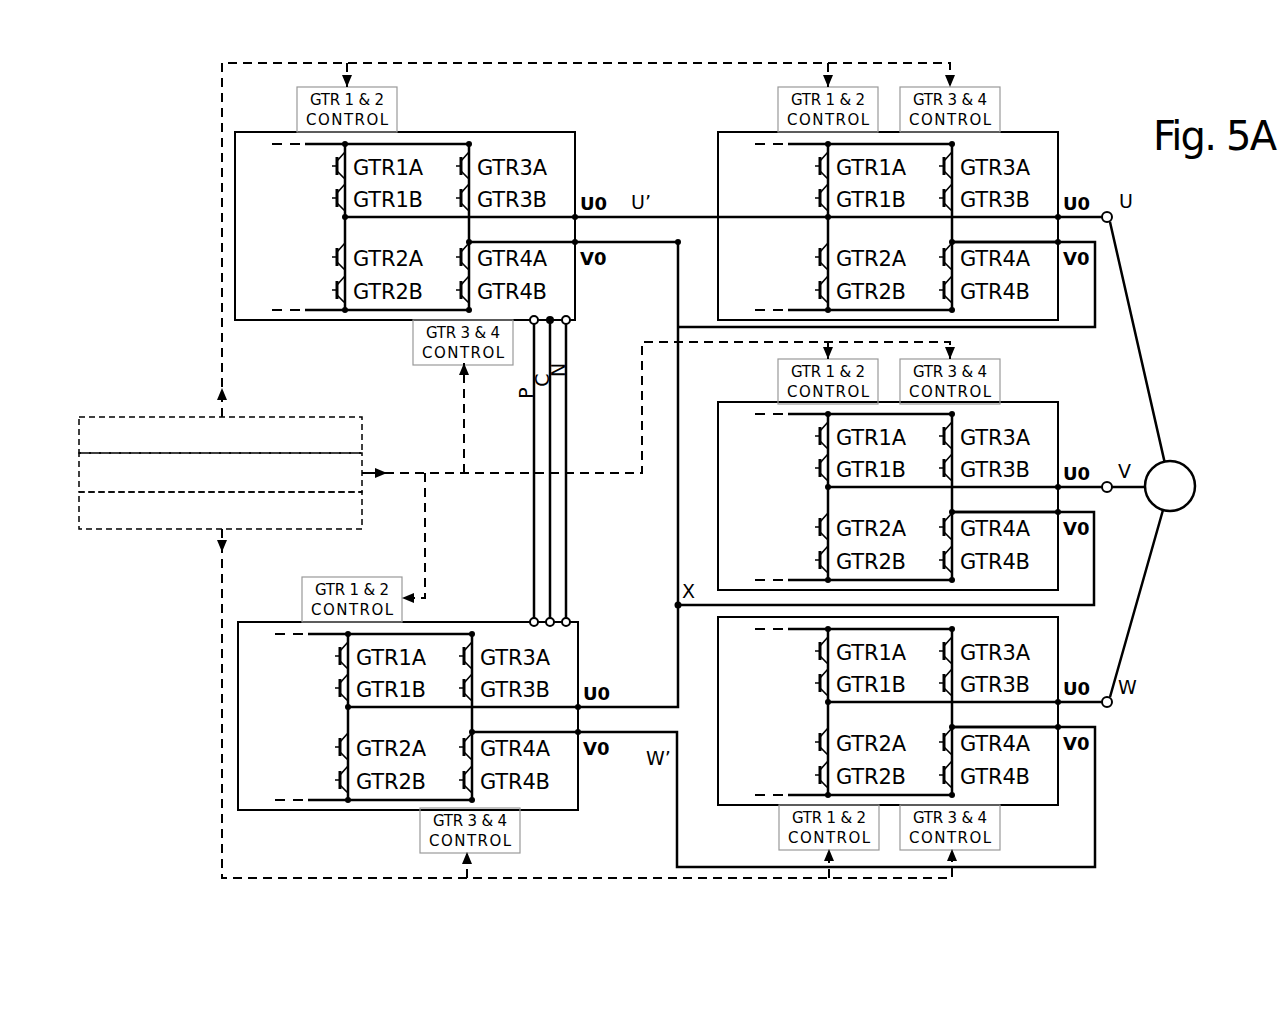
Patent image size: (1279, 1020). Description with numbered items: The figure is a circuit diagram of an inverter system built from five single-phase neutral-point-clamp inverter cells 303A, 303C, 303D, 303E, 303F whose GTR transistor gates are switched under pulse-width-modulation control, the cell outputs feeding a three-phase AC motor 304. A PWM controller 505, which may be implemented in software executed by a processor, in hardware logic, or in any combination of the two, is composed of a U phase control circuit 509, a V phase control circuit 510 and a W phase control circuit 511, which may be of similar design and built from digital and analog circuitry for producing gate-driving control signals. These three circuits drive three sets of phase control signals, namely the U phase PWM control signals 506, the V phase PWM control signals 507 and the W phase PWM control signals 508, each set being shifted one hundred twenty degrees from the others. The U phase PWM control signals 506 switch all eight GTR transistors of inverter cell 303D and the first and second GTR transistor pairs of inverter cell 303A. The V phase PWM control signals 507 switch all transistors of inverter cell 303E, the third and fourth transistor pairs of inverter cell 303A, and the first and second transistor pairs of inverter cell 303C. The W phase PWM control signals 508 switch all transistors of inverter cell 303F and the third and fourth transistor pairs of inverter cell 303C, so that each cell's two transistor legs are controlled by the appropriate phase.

The inverter cell 303A is at (305, 238).
The inverter cell 303C is at (303, 733).
The inverter cell 303D is at (780, 244).
The inverter cell 303E is at (780, 508).
The inverter cell 303F is at (780, 736).
The 3 phase AC motor 304 is at (1172, 463).
The PWM controller 505 is at (117, 403).
The U phase PWM control signals 506 is at (478, 60).
The V phase PWM control signals 507 is at (448, 468).
The W phase PWM control signals 508 is at (323, 875).
The U phase control circuit 509 is at (121, 444).
The V phase control circuit 510 is at (121, 483).
The W phase control circuit 511 is at (121, 520).